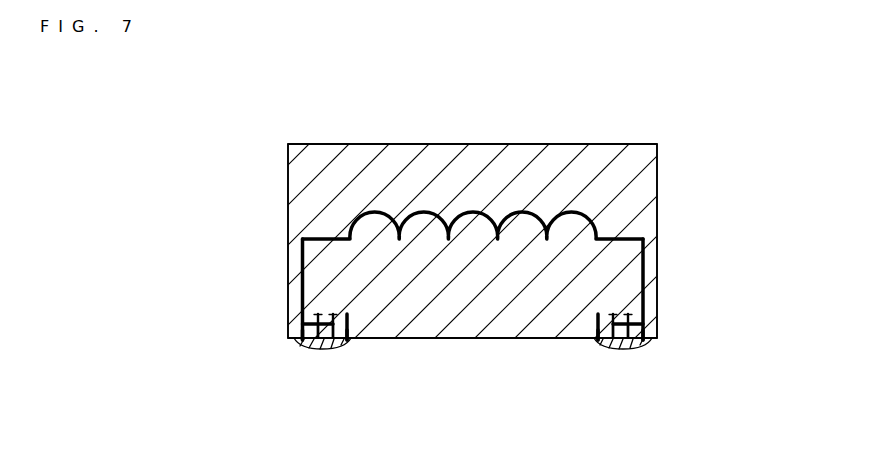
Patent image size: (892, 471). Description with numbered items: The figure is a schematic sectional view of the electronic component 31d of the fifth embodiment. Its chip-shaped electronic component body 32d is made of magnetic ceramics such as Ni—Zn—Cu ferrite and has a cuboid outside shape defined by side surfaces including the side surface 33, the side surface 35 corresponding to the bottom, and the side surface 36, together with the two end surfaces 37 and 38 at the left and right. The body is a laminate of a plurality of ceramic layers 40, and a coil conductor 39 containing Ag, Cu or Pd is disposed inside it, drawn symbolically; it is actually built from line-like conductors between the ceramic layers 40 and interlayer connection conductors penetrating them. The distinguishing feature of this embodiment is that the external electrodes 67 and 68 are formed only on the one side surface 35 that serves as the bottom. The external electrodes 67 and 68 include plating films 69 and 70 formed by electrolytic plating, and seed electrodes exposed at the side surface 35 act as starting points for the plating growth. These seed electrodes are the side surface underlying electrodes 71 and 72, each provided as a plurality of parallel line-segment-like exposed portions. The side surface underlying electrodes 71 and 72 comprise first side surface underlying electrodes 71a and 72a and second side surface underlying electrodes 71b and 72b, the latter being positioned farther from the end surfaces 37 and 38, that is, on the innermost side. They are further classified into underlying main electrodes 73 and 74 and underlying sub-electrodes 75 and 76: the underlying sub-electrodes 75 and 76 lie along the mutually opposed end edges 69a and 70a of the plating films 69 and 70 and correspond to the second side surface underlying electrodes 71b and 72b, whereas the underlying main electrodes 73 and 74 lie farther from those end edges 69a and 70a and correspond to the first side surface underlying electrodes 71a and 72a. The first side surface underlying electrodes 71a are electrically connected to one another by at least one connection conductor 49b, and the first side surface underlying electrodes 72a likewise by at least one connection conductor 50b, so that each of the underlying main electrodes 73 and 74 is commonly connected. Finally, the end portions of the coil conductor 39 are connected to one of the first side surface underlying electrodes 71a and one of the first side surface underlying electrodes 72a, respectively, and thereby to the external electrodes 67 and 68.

The electronic component 31d is at (358, 93).
The side surface 33 is at (453, 144).
The electronic component body 32d is at (529, 346).
The side surface 35 is at (462, 340).
The side surface 36 is at (428, 318).
The end surface 37 is at (288, 204).
The end surface 38 is at (657, 207).
The coil conductor 39 is at (473, 217).
The ceramic layers 40 is at (337, 341).
The connection conductor 49b is at (307, 343).
The connection conductor 50b is at (636, 343).
The external electrode 67 is at (288, 347).
The external electrode 68 is at (660, 345).
The plating film 69 is at (325, 343).
The end edge 69a is at (349, 341).
The plating film 70 is at (623, 344).
The end edge 70a is at (596, 342).
The side surface underlying electrodes 71 is at (150, 277).
The first side surface underlying electrodes 71a is at (303, 323).
The second side surface underlying electrode 71b is at (347, 313).
The underlying main electrode 73 is at (264, 323).
The underlying sub-electrode 75 is at (269, 311).
The side surface underlying electrodes 72 is at (784, 272).
The first side surface underlying electrodes 72a is at (645, 318).
The second side surface underlying electrode 72b is at (598, 313).
The underlying main electrode 74 is at (697, 321).
The underlying sub-electrode 76 is at (692, 308).